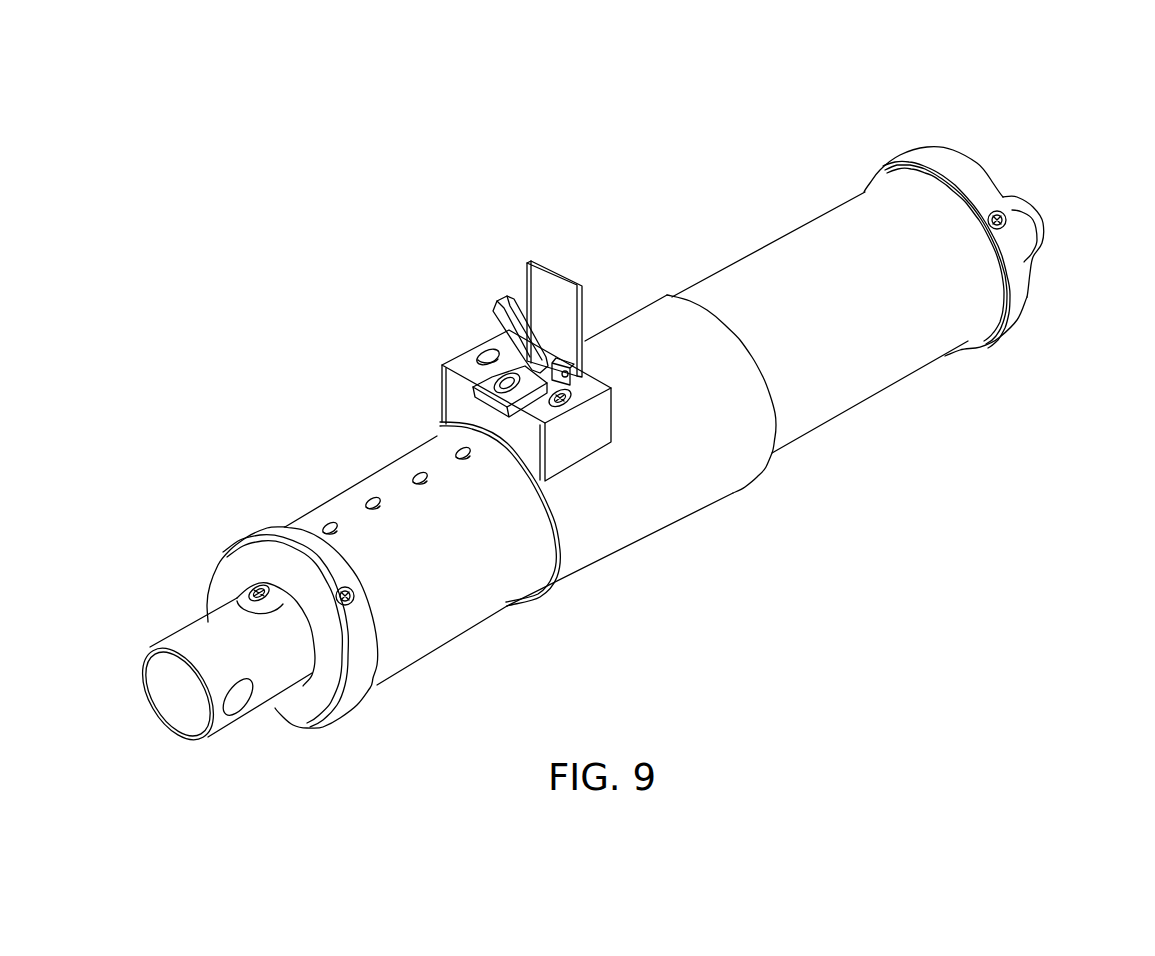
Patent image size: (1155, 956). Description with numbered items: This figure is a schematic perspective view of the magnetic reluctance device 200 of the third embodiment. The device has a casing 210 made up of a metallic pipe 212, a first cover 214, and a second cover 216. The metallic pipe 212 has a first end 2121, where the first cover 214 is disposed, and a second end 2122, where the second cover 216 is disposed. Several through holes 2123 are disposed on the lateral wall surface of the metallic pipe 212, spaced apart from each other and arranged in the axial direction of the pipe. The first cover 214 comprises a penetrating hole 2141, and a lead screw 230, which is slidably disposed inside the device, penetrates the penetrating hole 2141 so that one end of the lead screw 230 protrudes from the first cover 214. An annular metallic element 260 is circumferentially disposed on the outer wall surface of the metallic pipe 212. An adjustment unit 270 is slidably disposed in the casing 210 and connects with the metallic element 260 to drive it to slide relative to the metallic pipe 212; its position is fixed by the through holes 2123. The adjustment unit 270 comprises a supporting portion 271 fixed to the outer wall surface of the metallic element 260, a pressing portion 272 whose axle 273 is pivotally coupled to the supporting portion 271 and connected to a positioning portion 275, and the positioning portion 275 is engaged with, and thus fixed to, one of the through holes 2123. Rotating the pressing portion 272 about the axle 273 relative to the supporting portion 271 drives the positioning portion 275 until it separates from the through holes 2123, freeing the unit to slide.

The magnetic reluctance device 200 is at (162, 151).
The casing 210 is at (786, 203).
The metallic pipe 212 is at (726, 268).
The first end 2121 is at (400, 657).
The second end 2122 is at (993, 287).
The through hole 2123 is at (420, 465).
The first cover 214 is at (253, 558).
The penetrating hole 2141 is at (300, 680).
The second cover 216 is at (938, 180).
The lead screw 230 is at (180, 637).
The metallic element 260 is at (657, 313).
The adjustment unit 270 is at (419, 313).
The supporting portion 271 is at (460, 373).
The pressing portion 272 is at (520, 333).
The axle 273 is at (575, 370).
The positioning portion 275 is at (467, 383).